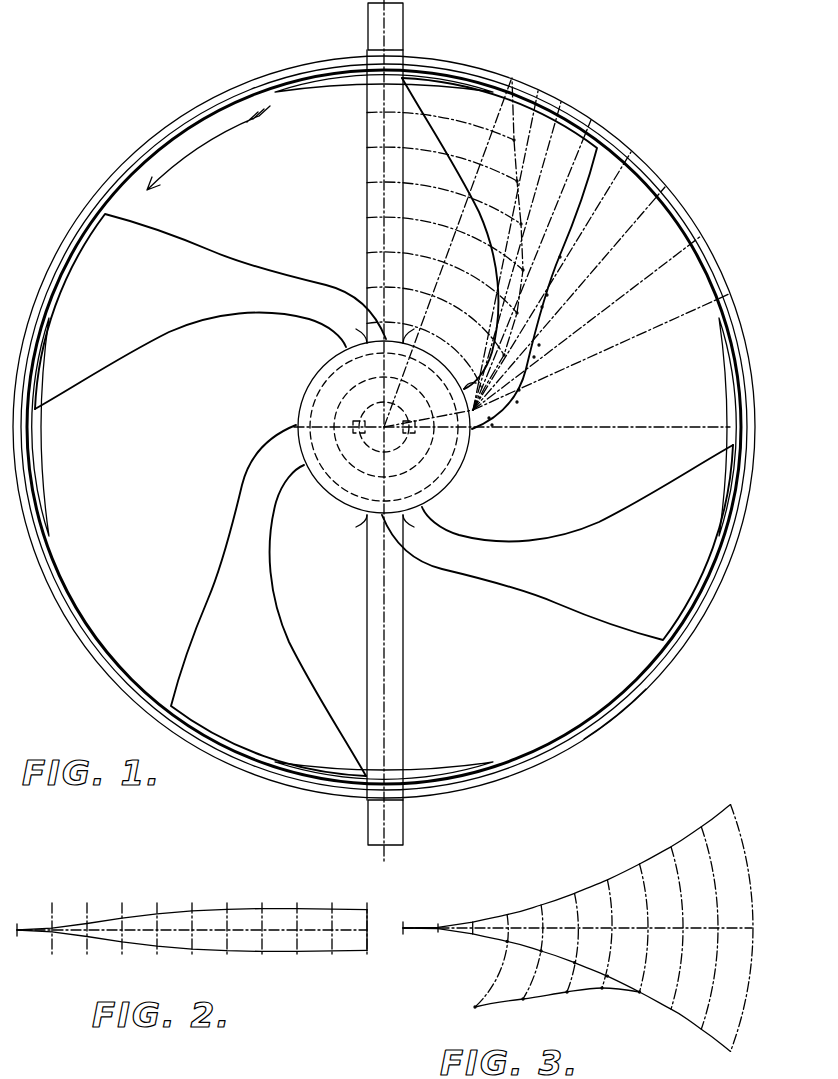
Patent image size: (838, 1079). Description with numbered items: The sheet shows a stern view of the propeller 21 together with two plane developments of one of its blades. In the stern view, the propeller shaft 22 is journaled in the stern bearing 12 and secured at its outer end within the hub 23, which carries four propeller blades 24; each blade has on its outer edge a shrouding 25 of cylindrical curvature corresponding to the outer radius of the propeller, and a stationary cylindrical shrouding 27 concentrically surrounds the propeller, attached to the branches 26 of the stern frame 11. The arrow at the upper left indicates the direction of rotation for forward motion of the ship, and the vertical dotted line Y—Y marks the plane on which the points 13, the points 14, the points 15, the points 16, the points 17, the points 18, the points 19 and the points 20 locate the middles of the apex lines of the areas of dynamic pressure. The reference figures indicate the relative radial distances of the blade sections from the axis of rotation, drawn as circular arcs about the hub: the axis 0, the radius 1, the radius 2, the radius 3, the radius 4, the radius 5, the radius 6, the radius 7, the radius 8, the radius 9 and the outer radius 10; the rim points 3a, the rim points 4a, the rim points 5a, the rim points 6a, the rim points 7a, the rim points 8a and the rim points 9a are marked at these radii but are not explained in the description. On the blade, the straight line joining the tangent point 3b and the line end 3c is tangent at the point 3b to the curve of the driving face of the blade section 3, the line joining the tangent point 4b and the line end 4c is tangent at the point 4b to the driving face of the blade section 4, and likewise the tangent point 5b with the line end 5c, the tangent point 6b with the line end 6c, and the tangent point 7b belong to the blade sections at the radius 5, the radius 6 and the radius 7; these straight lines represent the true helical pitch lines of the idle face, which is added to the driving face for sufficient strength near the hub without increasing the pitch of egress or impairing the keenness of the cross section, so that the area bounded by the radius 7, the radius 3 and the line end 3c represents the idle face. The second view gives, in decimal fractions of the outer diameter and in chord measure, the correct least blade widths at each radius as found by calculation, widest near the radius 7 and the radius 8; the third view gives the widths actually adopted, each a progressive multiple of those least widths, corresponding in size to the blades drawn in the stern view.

In FIG. 1, the axis of rotation 0 is at (512, 442).
In FIG. 2, the axis of rotation 0 is at (16, 942).
In FIG. 3, the axis of rotation 0 is at (403, 914).
In FIG. 1, the blade section radius 3 is at (474, 370).
In FIG. 2, the blade section radius 3 is at (122, 910).
In FIG. 3, the blade section radius 3 is at (505, 932).
In FIG. 1, the blade section radius 4 is at (505, 338).
In FIG. 2, the blade section radius 4 is at (157, 912).
In FIG. 3, the blade section radius 4 is at (542, 923).
In FIG. 1, the blade section radius 5 is at (524, 296).
In FIG. 2, the blade section radius 5 is at (192, 913).
In FIG. 3, the blade section radius 5 is at (578, 914).
In FIG. 1, the blade section radius 6 is at (531, 260).
In FIG. 2, the blade section radius 6 is at (227, 913).
In FIG. 3, the blade section radius 6 is at (610, 905).
In FIG. 1, the blade section radius 7 is at (530, 214).
In FIG. 2, the blade section radius 7 is at (262, 913).
In FIG. 3, the blade section radius 7 is at (644, 899).
In FIG. 1, the blade section radius 8 is at (528, 172).
In FIG. 2, the blade section radius 8 is at (297, 913).
In FIG. 3, the blade section radius 8 is at (677, 899).
In FIG. 1, the blade section radius 9 is at (523, 131).
In FIG. 2, the blade section radius 9 is at (332, 913).
In FIG. 3, the blade section radius 9 is at (710, 899).
In FIG. 1, the outer radius 10 is at (469, 241).
In FIG. 2, the outer radius 10 is at (368, 913).
In FIG. 3, the outer radius 10 is at (747, 899).
In FIG. 2, the radius 1 is at (52, 906).
In FIG. 3, the radius 1 is at (437, 917).
In FIG. 2, the radius 2 is at (87, 908).
In FIG. 3, the radius 2 is at (473, 916).
In FIG. 1, the rim point station 3 3a is at (618, 348).
In FIG. 1, the rim point station 4 4a is at (607, 318).
In FIG. 1, the rim point station 5 5a is at (590, 291).
In FIG. 1, the rim point station 6 6a is at (570, 271).
In FIG. 1, the rim point station 7 7a is at (557, 261).
In FIG. 1, the rim point station 8 8a is at (545, 251).
In FIG. 1, the rim point station 9 9a is at (528, 242).
In FIG. 1, the tangent point of blade section 3 3b is at (515, 413).
In FIG. 3, the tangent point of blade section 3 3b is at (520, 944).
In FIG. 1, the tangent point of blade section 4 4b is at (542, 379).
In FIG. 3, the tangent point of blade section 4 4b is at (555, 949).
In FIG. 1, the tangent point of blade section 5 5b is at (569, 329).
In FIG. 3, the tangent point of blade section 5 5b is at (588, 956).
In FIG. 1, the tangent point of blade section 6 6b is at (574, 284).
In FIG. 3, the tangent point of blade section 6 6b is at (619, 967).
In FIG. 1, the tangent point of blade section 7 7b is at (577, 241).
In FIG. 3, the tangent point of blade section 7 7b is at (653, 981).
In FIG. 1, the idle face pitch line end at section 3 3c is at (511, 438).
In FIG. 3, the idle face pitch line end at section 3 3c is at (472, 1020).
In FIG. 1, the idle face pitch line end at section 4 4c is at (538, 398).
In FIG. 3, the idle face pitch line end at section 4 4c is at (516, 1014).
In FIG. 1, the idle face pitch line end at section 5 5c is at (553, 346).
In FIG. 3, the idle face pitch line end at section 5 5c is at (562, 1005).
In FIG. 1, the idle face pitch line end at section 6 6c is at (565, 298).
In FIG. 3, the idle face pitch line end at section 6 6c is at (602, 1002).
In FIG. 1, the stern frame 11 is at (360, 425).
In FIG. 1, the stern bearing 12 is at (369, 438).
In FIG. 1, the apex line middle for radius 3 area 13 is at (409, 350).
In FIG. 1, the apex line middle for radius 4 area 14 is at (420, 315).
In FIG. 1, the apex line middle for radius 5 area 15 is at (427, 277).
In FIG. 1, the apex line middle for radius 6 area 16 is at (430, 238).
In FIG. 1, the apex line middle for radius 7 area 17 is at (429, 197).
In FIG. 1, the apex line middle for radius 8 area 18 is at (427, 158).
In FIG. 1, the apex line middle for radius 9 area 19 is at (425, 119).
In FIG. 1, the apex line middle for radius 10 area 20 is at (384, 414).
In FIG. 1, the propeller 21 is at (367, 427).
In FIG. 1, the propeller shaft 22 is at (408, 438).
In FIG. 1, the hub 23 is at (375, 438).
In FIG. 1, the propeller blade 24 is at (384, 427).
In FIG. 1, the shrouding 25 is at (384, 427).
In FIG. 1, the branch of the stern frame 26 is at (402, 424).
In FIG. 1, the stationary cylindrical shrouding 27 is at (610, 714).
In FIG. 1, the section line Y— Y is at (407, 437).